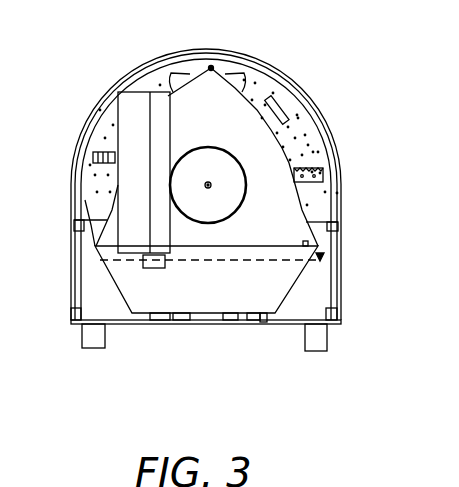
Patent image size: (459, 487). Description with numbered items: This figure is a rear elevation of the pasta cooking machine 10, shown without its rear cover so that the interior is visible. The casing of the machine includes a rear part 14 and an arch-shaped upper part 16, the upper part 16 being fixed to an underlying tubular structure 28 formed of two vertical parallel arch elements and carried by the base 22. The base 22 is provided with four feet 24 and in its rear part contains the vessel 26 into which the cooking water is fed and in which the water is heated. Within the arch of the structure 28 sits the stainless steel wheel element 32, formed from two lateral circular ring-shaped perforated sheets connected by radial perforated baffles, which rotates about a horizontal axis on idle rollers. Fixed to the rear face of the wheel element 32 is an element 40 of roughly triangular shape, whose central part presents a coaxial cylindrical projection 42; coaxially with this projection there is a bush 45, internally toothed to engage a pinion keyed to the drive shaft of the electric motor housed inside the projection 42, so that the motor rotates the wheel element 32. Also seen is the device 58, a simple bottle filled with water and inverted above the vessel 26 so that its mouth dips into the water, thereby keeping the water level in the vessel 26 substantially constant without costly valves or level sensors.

The pasta cooking machine 10 is at (305, 72).
The rear part 14 is at (105, 285).
The upper part 16 is at (160, 72).
The base 22 is at (290, 328).
The feet 24 is at (315, 340).
The vessel 26 is at (293, 291).
The tubular structure 28 is at (320, 256).
The wheel element 32 is at (307, 140).
The element of roughly triangular shape 40 is at (265, 208).
The cylindrical projection 42 is at (208, 224).
The bush 45 is at (210, 188).
The device 58 is at (173, 121).